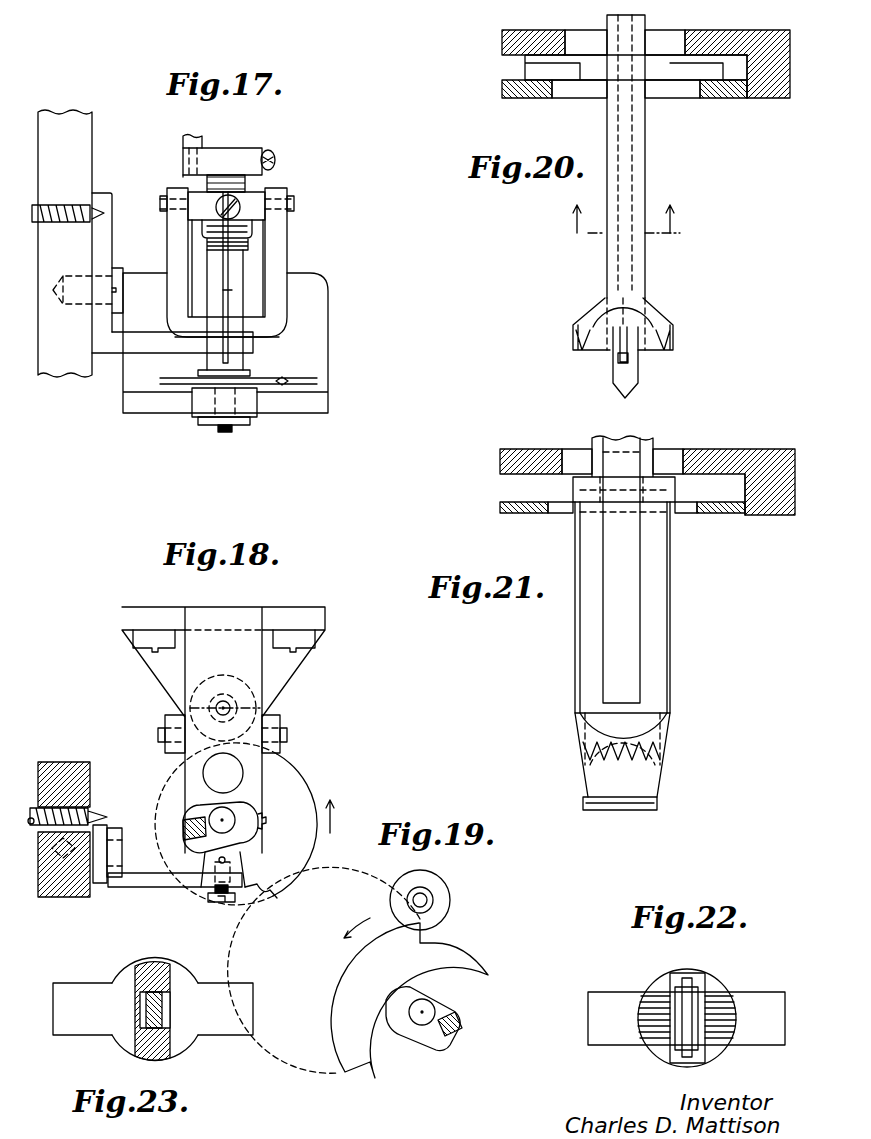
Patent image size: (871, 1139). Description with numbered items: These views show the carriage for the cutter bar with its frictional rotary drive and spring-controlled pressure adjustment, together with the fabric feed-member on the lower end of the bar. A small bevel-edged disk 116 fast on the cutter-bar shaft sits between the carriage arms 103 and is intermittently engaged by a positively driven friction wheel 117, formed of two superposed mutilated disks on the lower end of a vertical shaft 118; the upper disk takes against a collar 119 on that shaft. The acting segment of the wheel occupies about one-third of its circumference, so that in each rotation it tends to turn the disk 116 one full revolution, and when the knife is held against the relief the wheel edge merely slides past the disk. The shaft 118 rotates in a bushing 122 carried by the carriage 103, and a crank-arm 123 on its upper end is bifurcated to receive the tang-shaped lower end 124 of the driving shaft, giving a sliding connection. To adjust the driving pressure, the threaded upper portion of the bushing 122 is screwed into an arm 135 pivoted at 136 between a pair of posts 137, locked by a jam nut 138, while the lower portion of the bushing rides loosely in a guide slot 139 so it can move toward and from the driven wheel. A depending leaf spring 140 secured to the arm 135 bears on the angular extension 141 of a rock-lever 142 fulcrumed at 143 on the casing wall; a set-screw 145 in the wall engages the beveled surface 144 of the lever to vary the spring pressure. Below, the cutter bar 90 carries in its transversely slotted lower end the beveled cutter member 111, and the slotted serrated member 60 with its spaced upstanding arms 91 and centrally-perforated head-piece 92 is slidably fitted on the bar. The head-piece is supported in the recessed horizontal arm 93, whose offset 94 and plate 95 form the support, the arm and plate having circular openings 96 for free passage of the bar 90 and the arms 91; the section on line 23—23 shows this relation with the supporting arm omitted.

In FIG. 20, the section line 23 is at (627, 229).
In FIG. 20, the slotted serrated member 60 is at (575, 335).
In FIG. 21, the slotted serrated member 60 is at (665, 748).
In FIG. 22, the slotted serrated member 60 is at (715, 995).
In FIG. 20, the cutter bar 90 is at (636, 370).
In FIG. 21, the cutter bar 90 is at (632, 647).
In FIG. 22, the cutter bar 90 is at (678, 992).
In FIG. 23, the cutter bar 90 is at (172, 983).
In FIG. 20, the upstanding arms 91 is at (645, 178).
In FIG. 21, the upstanding arms 91 is at (672, 603).
In FIG. 22, the upstanding arms 91 is at (680, 972).
In FIG. 23, the upstanding arms 91 is at (148, 970).
In FIG. 20, the head-piece 92 is at (572, 72).
In FIG. 21, the head-piece 92 is at (600, 490).
In FIG. 22, the head-piece 92 is at (610, 1005).
In FIG. 23, the head-piece 92 is at (238, 1008).
In FIG. 20, the horizontal arm 93 is at (752, 45).
In FIG. 21, the horizontal arm 93 is at (752, 460).
In FIG. 20, the offset 94 is at (748, 78).
In FIG. 21, the offset 94 is at (735, 492).
In FIG. 20, the plate 95 is at (722, 95).
In FIG. 21, the plate 95 is at (505, 505).
In FIG. 20, the circular openings 96 is at (665, 42).
In FIG. 21, the circular openings 96 is at (578, 447).
In FIG. 17, the carriage arms 103 is at (260, 328).
In FIG. 18, the carriage arms 103 is at (243, 666).
In FIG. 20, the cutter member 111 is at (620, 375).
In FIG. 21, the cutter member 111 is at (655, 812).
In FIG. 22, the cutter member 111 is at (690, 985).
In FIG. 18, the bevel-edged disk 116 is at (262, 708).
In FIG. 19, the bevel-edged disk 116 is at (450, 895).
In FIG. 17, the friction wheel 117 is at (290, 385).
In FIG. 18, the friction wheel 117 is at (290, 785).
In FIG. 19, the friction wheel 117 is at (418, 962).
In FIG. 17, the vertical shaft 118 is at (222, 428).
In FIG. 18, the vertical shaft 118 is at (222, 820).
In FIG. 19, the vertical shaft 118 is at (425, 1010).
In FIG. 17, the collar 119 is at (250, 372).
In FIG. 17, the bushing 122 is at (250, 252).
In FIG. 17, the crank-arm 123 is at (240, 153).
In FIG. 18, the crank-arm 123 is at (248, 838).
In FIG. 19, the crank-arm 123 is at (428, 1035).
In FIG. 17, the tang-shaped lower end 124 is at (183, 140).
In FIG. 18, the tang-shaped lower end 124 is at (185, 830).
In FIG. 19, the tang-shaped lower end 124 is at (455, 1035).
In FIG. 17, the arm 135 is at (196, 200).
In FIG. 17, the pivot 136 is at (163, 205).
In FIG. 18, the pivot 136 is at (158, 736).
In FIG. 17, the posts 137 is at (173, 230).
In FIG. 18, the posts 137 is at (165, 722).
In FIG. 17, the jam nut 138 is at (258, 232).
In FIG. 17, the guide slot 139 is at (262, 337).
In FIG. 17, the leaf spring 140 is at (237, 288).
In FIG. 18, the leaf spring 140 is at (230, 861).
In FIG. 17, the angular extension 141 is at (152, 345).
In FIG. 18, the angular extension 141 is at (160, 890).
In FIG. 17, the rock-lever 142 is at (112, 263).
In FIG. 18, the rock-lever 142 is at (96, 878).
In FIG. 17, the fulcrum 143 is at (100, 290).
In FIG. 18, the fulcrum 143 is at (115, 852).
In FIG. 17, the beveled surface 144 is at (103, 203).
In FIG. 18, the beveled surface 144 is at (105, 815).
In FIG. 17, the set-screw 145 is at (62, 204).
In FIG. 18, the set-screw 145 is at (33, 820).